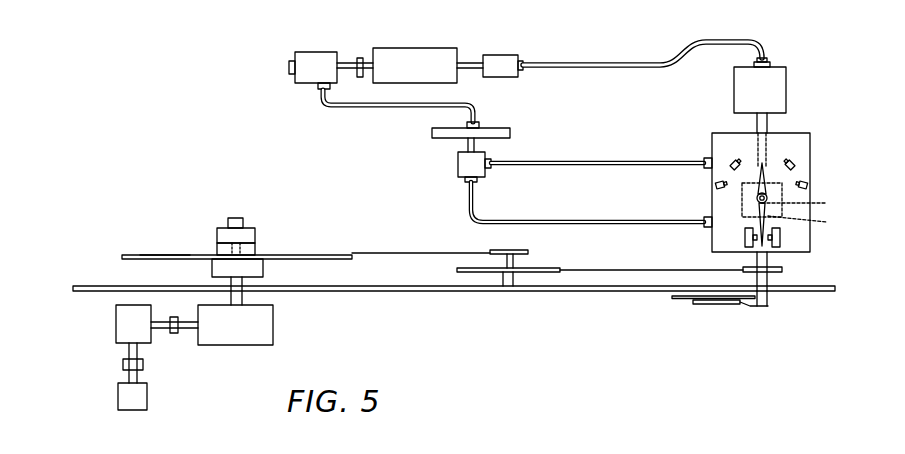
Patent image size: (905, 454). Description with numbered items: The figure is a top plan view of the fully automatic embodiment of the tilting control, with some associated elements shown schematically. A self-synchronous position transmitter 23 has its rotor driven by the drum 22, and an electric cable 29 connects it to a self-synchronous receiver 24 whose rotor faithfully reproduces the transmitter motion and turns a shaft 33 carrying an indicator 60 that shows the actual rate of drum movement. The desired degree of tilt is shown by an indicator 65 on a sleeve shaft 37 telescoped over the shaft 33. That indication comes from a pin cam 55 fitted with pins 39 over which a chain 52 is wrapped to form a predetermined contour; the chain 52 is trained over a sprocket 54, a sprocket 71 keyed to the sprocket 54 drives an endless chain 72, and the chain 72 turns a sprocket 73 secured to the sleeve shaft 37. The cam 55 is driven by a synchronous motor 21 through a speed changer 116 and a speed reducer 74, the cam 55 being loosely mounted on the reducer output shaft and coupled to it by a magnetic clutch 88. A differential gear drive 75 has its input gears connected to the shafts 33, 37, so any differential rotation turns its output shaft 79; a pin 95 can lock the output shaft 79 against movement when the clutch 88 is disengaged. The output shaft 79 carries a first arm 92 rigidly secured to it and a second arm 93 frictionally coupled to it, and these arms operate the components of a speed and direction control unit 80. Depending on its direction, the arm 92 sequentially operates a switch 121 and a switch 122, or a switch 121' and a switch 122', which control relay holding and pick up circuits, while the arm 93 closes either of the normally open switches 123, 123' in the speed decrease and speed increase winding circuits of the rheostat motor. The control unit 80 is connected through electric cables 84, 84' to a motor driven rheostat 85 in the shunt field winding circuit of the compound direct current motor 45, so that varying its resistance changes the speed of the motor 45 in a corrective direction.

The synchronous motor 21 is at (125, 397).
The drum 22 is at (418, 76).
The self-synchronous position transmitter 23 is at (494, 78).
The self-synchronous receiver 24 is at (734, 88).
The electric cable 29 is at (621, 72).
The shaft 33 is at (767, 124).
The sleeve shaft 37 is at (768, 262).
The pin 39 is at (183, 254).
The motor 45 is at (312, 70).
The chain 52 is at (438, 248).
The sprocket 54 is at (530, 251).
The pin cam 55 is at (313, 262).
The indicator 60 is at (711, 306).
The indicator 65 is at (677, 300).
The sprocket 71 is at (548, 268).
The endless chain 72 is at (640, 254).
The sprocket 73 is at (743, 268).
The speed reducer 74 is at (235, 338).
The differential gear drive 75 is at (807, 222).
The differential output shaft 79 is at (757, 200).
The speed and direction control unit 80 is at (810, 137).
The electric cable 84 is at (598, 156).
The electric cable 84' is at (588, 202).
The motor driven rheostat 85 is at (511, 134).
The magnetic clutch 88 is at (256, 238).
The first arm 92 is at (765, 165).
The second arm 93 is at (770, 216).
The pin 95 is at (804, 203).
The speed changer 116 is at (125, 326).
The switch 121 is at (818, 159).
The switch 121' is at (705, 145).
The switch 122 is at (825, 183).
The switch 122' is at (696, 185).
The switch 123 is at (716, 240).
The switch 123' is at (813, 250).